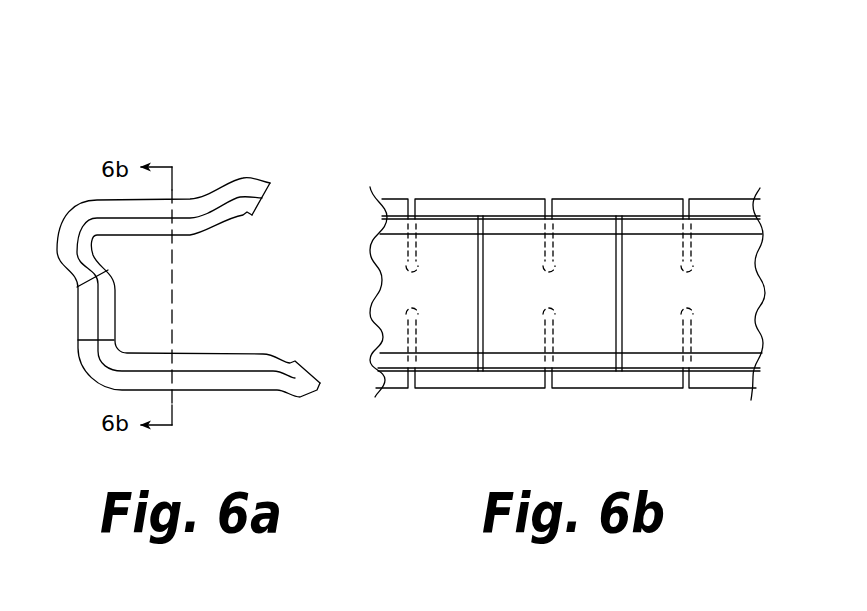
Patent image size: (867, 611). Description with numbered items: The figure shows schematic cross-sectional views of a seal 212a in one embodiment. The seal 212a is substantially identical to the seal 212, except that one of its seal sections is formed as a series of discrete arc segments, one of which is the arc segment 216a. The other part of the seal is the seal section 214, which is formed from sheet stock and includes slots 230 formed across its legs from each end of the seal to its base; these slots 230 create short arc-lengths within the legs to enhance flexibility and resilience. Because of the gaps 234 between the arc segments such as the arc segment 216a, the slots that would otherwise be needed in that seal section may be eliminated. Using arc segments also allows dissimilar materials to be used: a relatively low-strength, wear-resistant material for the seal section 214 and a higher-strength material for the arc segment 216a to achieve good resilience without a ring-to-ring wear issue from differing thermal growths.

In FIG. 6B, the seal 212 is at (658, 61).
In FIG. 6A, the seal 212a is at (60, 330).
In FIG. 6B, the seal section 214 is at (458, 198).
In FIG. 6B, the slots 230 is at (551, 196).
In FIG. 6B, the gaps 234 is at (482, 373).
In FIG. 6B, the arc segment 216a is at (580, 337).